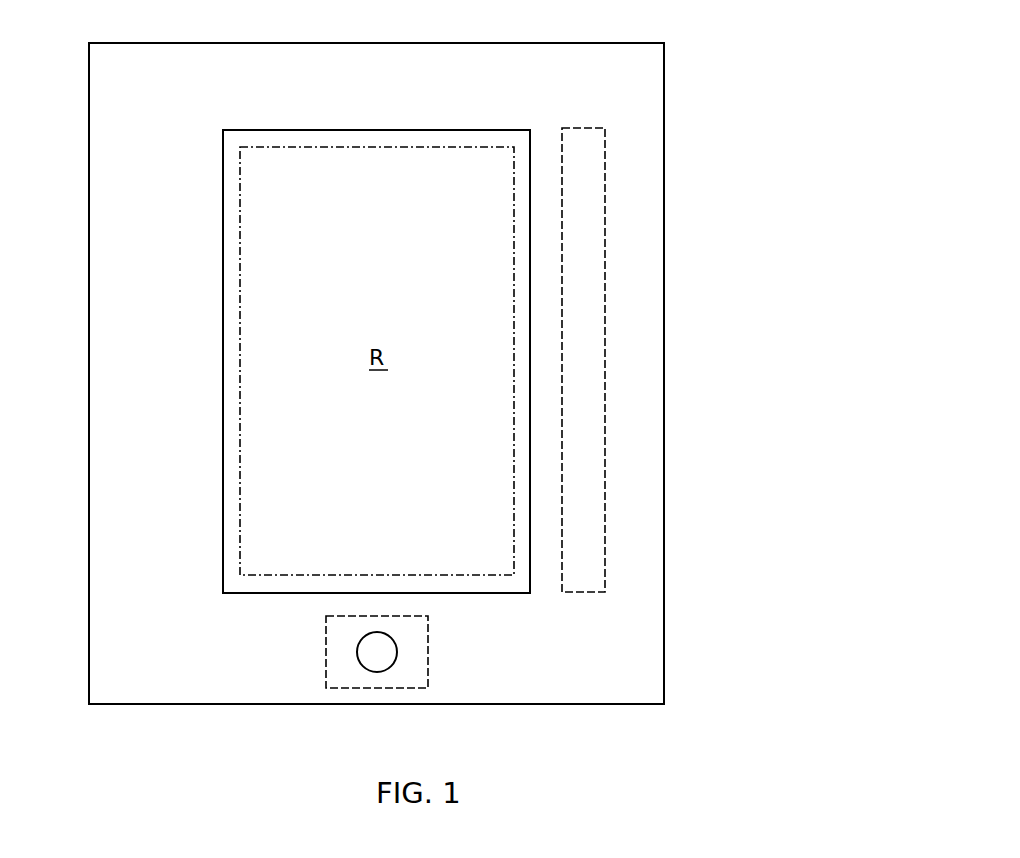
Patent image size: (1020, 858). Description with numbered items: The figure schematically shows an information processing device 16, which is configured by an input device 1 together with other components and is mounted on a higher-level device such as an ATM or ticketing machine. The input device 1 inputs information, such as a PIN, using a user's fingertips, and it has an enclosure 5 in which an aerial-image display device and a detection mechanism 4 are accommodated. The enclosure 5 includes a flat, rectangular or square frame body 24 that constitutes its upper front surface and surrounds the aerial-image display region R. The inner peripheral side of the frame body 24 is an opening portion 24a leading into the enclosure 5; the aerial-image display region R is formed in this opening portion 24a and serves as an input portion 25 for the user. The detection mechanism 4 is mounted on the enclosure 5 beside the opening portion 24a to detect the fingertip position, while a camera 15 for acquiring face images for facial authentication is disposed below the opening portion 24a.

The input device 1 is at (806, 81).
The information processing device 16 is at (808, 78).
The detection mechanism 4 is at (605, 196).
The enclosure 5 is at (664, 512).
The camera 15 is at (428, 656).
The frame body 24 is at (89, 447).
The opening portion 24a is at (228, 508).
The input portion 25 is at (240, 262).